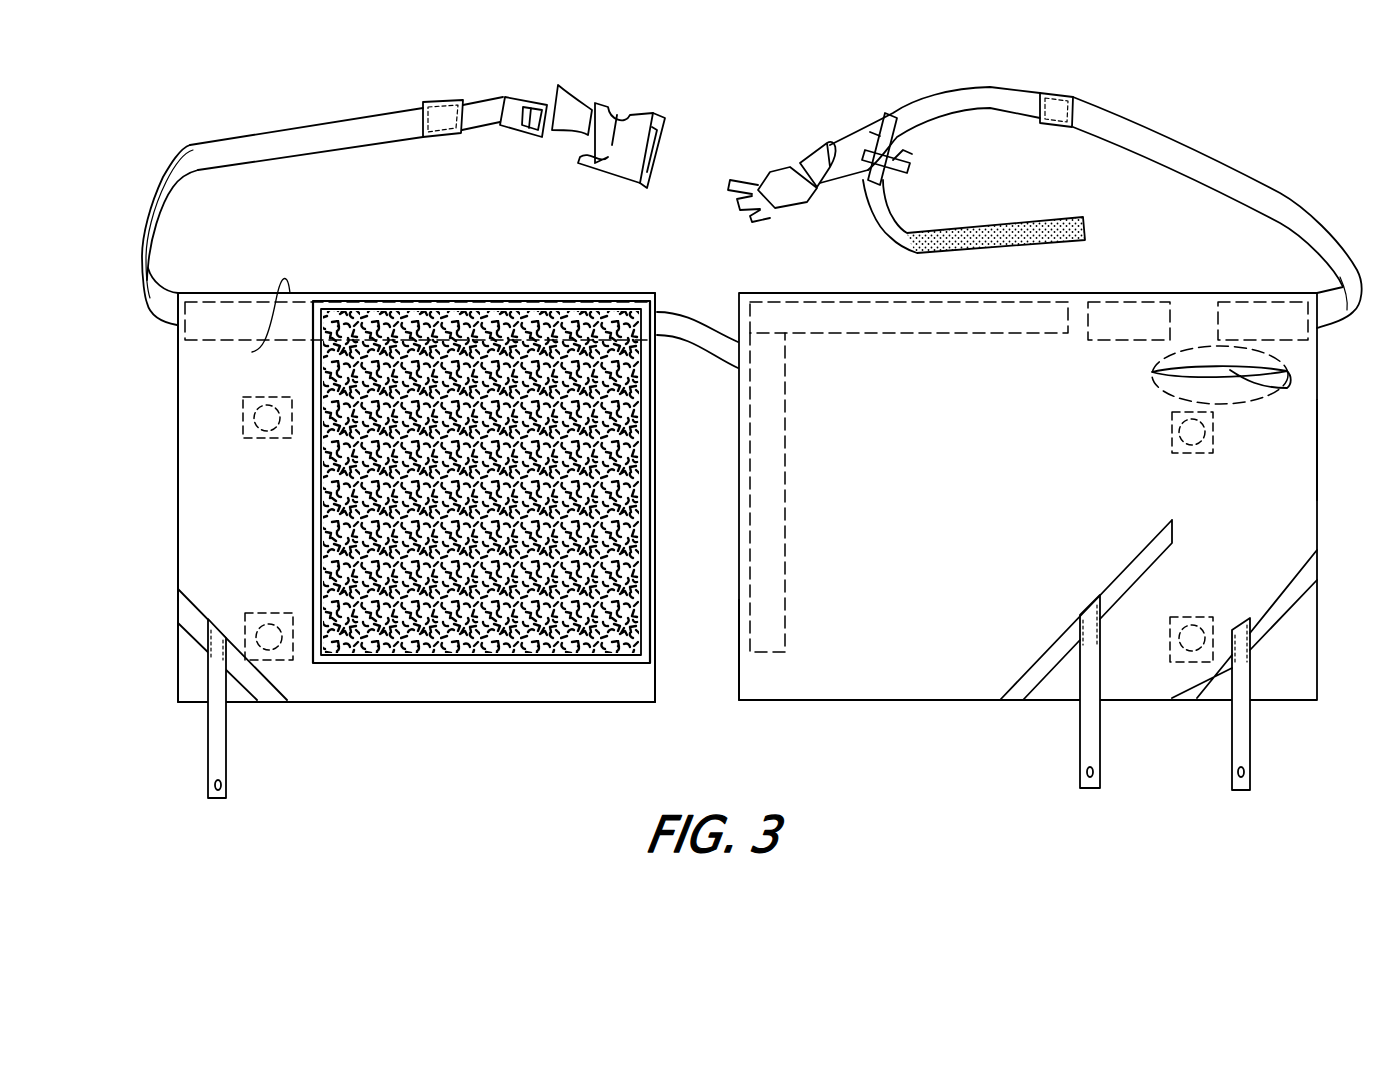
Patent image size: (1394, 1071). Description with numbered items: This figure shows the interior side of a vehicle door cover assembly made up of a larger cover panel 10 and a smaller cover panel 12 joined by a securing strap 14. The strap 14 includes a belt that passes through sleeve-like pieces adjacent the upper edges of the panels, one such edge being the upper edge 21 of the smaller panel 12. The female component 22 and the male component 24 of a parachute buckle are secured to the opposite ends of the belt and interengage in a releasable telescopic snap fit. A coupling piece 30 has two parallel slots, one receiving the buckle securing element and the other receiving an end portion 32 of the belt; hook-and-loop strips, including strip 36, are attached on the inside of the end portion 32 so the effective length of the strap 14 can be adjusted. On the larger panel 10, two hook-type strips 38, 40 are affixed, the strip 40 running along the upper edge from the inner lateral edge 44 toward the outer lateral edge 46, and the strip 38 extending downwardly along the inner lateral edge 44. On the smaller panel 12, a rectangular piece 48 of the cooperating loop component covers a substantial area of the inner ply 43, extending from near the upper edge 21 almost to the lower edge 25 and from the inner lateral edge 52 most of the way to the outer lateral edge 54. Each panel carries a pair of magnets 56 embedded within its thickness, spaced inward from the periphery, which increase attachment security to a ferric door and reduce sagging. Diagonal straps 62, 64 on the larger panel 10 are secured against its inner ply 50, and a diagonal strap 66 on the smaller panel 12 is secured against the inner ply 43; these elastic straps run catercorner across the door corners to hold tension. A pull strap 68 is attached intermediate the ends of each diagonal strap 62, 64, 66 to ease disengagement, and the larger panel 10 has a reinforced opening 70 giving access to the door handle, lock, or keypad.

The cover panel 10 is at (1325, 505).
The cover panel 12 is at (445, 706).
The securing strap 14 is at (1283, 199).
The upper edge 21 is at (247, 334).
The female component 22 is at (640, 115).
The male component 24 is at (758, 180).
The lower edge 25 is at (555, 712).
The coupling piece 30 is at (897, 163).
The end portion 32 is at (945, 105).
The strip 36 is at (1050, 220).
The strip 38 is at (775, 432).
The strip 40 is at (956, 325).
The inner ply 43 is at (200, 482).
The inner lateral edge 44 is at (740, 690).
The outer lateral edge 46 is at (1317, 455).
The rectangular piece 48 is at (424, 330).
The inner ply 50 is at (890, 680).
The inner lateral edge 52 is at (655, 666).
The outer lateral edge 54 is at (178, 542).
The magnet 56 is at (270, 442).
The diagonal strap 62 is at (1300, 600).
The diagonal strap 64 is at (1132, 572).
The diagonal strap 66 is at (265, 690).
The pull strap 68 is at (228, 760).
The reinforced opening 70 is at (1290, 385).